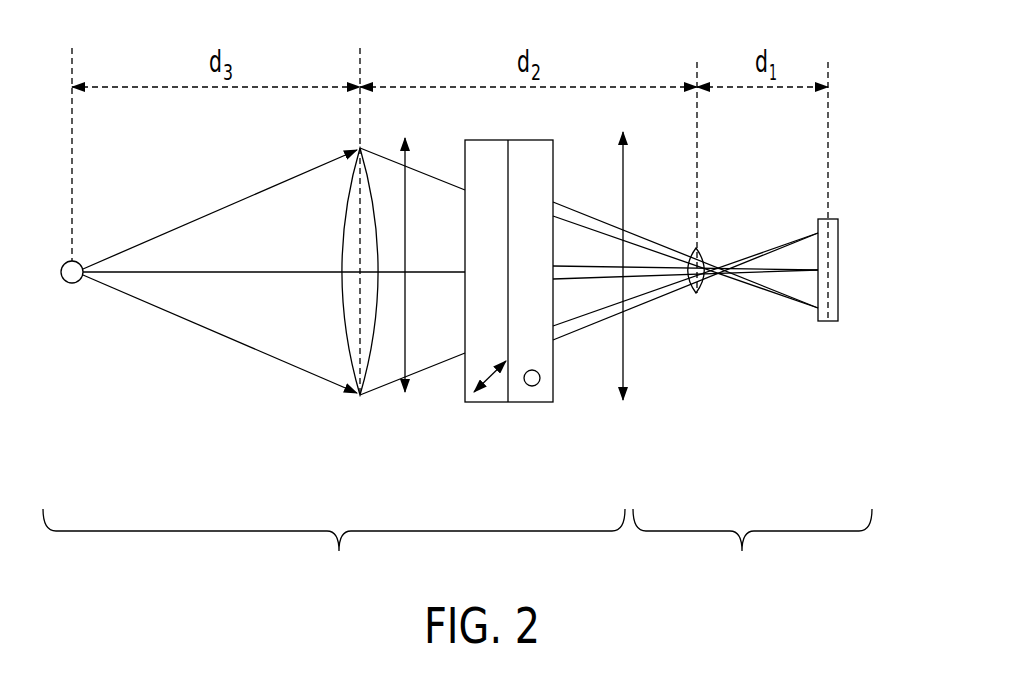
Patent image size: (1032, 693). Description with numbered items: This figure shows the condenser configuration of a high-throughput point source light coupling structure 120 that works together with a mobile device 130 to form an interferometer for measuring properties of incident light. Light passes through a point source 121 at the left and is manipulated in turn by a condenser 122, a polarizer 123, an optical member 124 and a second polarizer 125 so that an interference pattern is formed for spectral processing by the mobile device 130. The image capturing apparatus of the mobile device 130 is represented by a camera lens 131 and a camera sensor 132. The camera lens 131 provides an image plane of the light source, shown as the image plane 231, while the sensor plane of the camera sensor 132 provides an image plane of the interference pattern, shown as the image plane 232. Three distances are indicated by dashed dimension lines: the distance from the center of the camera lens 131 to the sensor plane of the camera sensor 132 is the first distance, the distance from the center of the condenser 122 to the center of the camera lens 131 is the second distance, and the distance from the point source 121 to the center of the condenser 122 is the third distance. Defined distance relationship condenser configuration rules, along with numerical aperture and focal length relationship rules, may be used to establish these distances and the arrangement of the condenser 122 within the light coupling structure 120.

The high-throughput point source light coupling structure 120 is at (334, 552).
The point source 121 is at (70, 283).
The condenser 122 is at (358, 398).
The polarizer 123 is at (405, 392).
The optical member 124 is at (507, 413).
The polarizer 125 is at (626, 373).
The mobile device 130 is at (752, 552).
The camera lens 131 is at (698, 295).
The camera sensor 132 is at (834, 228).
The image plane 231 is at (697, 64).
The image plane 232 is at (829, 64).